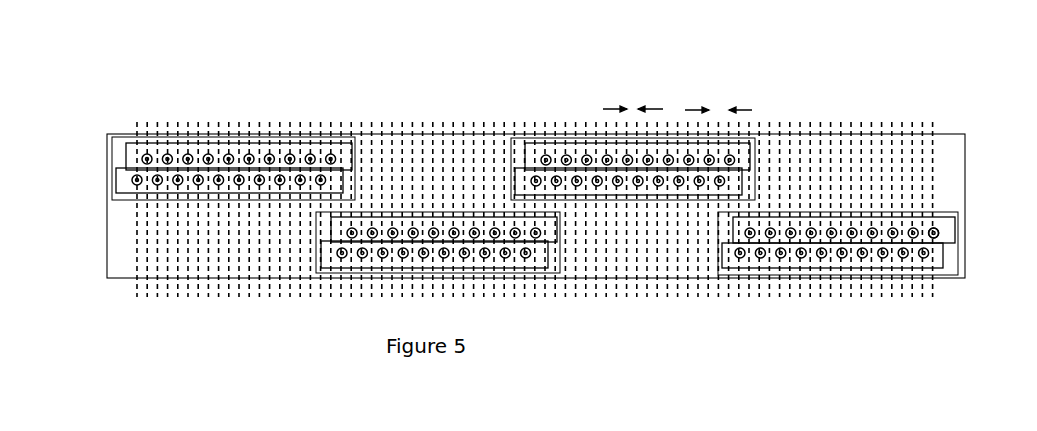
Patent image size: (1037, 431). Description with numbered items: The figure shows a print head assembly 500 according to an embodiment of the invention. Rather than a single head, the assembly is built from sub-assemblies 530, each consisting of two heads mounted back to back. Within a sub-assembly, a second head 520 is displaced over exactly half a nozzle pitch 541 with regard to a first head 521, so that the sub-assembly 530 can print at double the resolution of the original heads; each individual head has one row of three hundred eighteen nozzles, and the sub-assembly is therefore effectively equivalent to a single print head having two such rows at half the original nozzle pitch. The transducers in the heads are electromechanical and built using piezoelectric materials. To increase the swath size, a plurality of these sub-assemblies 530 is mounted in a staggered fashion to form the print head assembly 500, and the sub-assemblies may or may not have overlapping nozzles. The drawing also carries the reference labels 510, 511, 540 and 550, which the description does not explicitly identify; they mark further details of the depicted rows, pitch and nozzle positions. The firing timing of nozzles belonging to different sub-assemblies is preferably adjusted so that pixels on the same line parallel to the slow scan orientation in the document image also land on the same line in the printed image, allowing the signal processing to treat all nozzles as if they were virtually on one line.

The print head assembly 500 is at (965, 278).
The first row of contact pads 510 is at (946, 261).
The second row of contact pads 511 is at (958, 226).
The second head 520 is at (509, 267).
The first head 521 is at (548, 247).
The sub-assembly 530 is at (565, 186).
The trace pitch 540 is at (633, 108).
The half nozzle pitch 541 is at (715, 108).
The contact via 550 is at (937, 227).